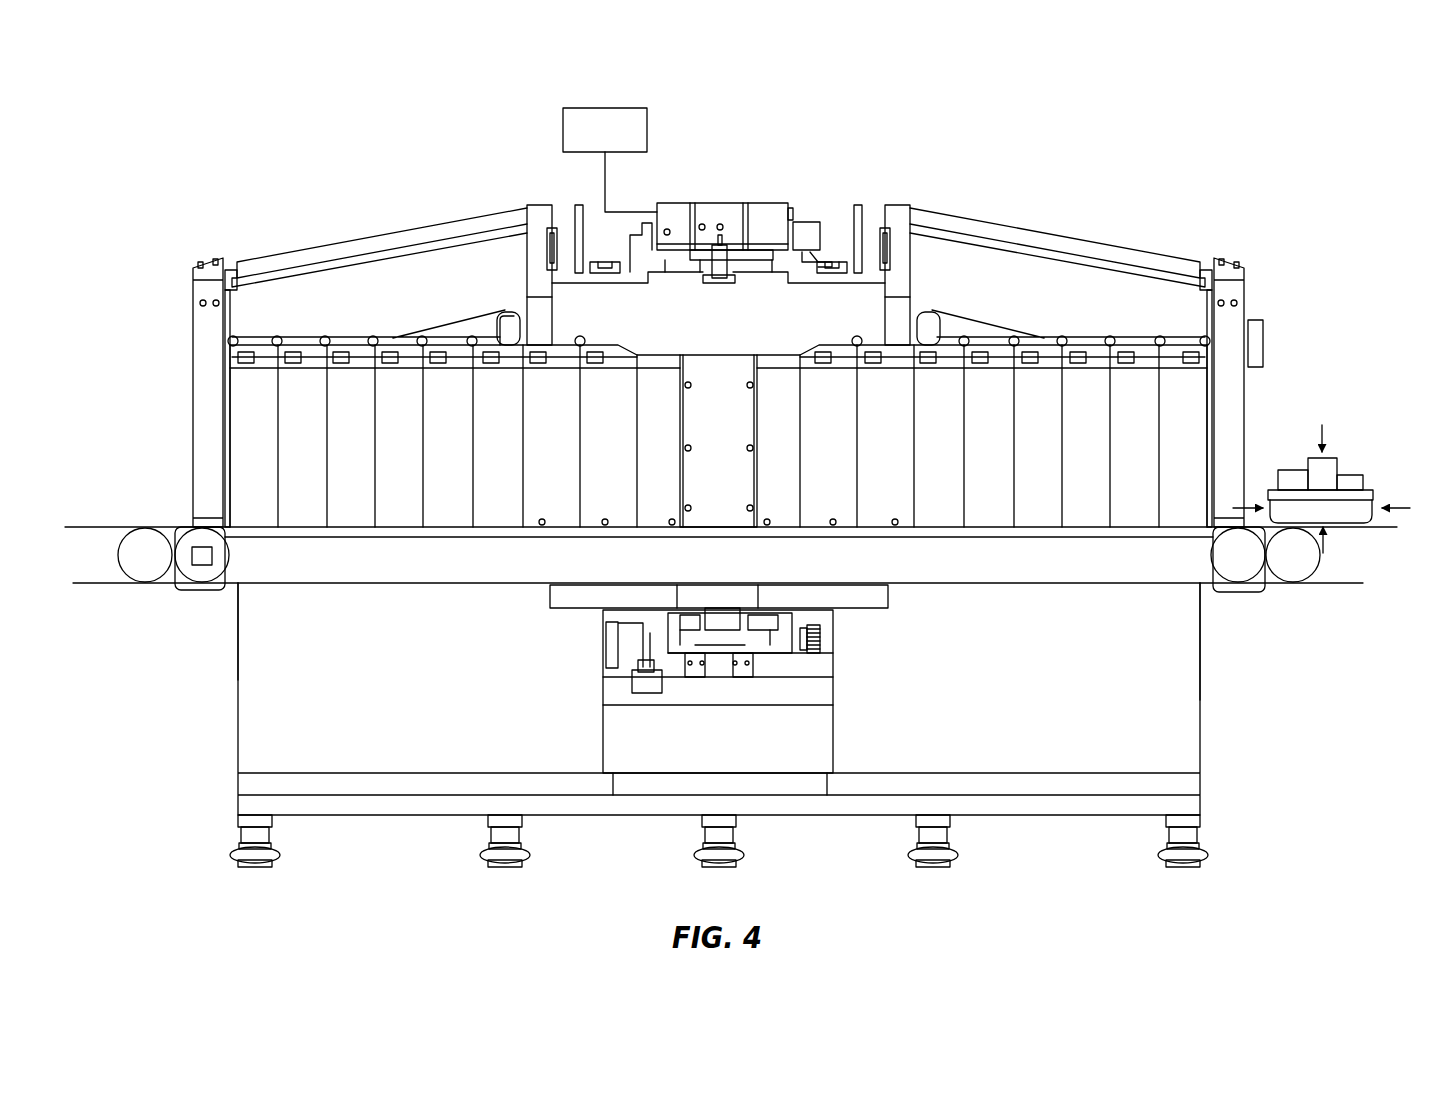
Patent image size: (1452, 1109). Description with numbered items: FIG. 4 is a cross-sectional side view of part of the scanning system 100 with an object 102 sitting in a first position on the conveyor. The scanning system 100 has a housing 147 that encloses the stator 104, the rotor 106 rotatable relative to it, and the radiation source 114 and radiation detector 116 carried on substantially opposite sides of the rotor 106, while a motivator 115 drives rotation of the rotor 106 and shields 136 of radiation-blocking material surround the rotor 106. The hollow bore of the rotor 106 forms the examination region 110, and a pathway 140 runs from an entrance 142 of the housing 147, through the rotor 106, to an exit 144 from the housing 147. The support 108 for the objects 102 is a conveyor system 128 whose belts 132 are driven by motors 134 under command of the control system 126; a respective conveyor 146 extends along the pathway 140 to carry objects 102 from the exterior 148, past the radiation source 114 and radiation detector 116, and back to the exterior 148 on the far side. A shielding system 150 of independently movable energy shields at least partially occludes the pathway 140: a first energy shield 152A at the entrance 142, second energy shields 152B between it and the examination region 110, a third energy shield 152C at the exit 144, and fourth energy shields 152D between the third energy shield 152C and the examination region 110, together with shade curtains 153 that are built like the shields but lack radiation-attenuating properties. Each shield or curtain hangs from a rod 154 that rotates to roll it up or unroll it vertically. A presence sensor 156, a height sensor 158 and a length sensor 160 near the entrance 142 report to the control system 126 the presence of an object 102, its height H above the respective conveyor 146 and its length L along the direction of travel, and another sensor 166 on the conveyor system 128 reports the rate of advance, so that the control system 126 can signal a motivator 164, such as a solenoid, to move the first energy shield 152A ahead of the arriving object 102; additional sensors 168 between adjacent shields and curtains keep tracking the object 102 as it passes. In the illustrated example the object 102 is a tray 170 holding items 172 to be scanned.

The scanning system 100 is at (1135, 206).
The object 102 is at (1413, 450).
The stator 104 is at (765, 697).
The rotor 106 is at (765, 216).
The support 108 is at (178, 515).
The examination region 110 is at (738, 505).
The radiation source 114 is at (725, 240).
The motivator 115 is at (822, 640).
The radiation detector 116 is at (718, 650).
The control system 126 is at (624, 143).
The conveyor system 128 is at (1266, 647).
The belts 132 is at (1222, 586).
The motors 134 is at (1315, 565).
The shields 136 is at (740, 753).
The pathway 140 is at (940, 473).
The entrance 142 is at (1277, 416).
The exit 144 is at (185, 445).
The respective conveyor 146 is at (233, 592).
The housing 147 is at (195, 328).
The exterior 148 is at (364, 153).
The shielding system 150 is at (1008, 305).
The first energy shield 152A is at (1218, 400).
The second energy shield 152B is at (855, 392).
The third energy shield 152C is at (230, 390).
The fourth energy shield 152D is at (423, 390).
The shade curtain 153 is at (327, 393).
The rod 154 is at (470, 337).
The presence sensor 156 is at (1343, 336).
The height sensor 158 is at (1269, 279).
The length sensor 160 is at (1262, 330).
The motivator 164 is at (372, 337).
The sensor 166 is at (200, 567).
The additional sensors 168 is at (293, 352).
The tray 170 is at (1345, 523).
The items 172 is at (1330, 467).
The length L is at (1400, 508).
The height H is at (1327, 547).